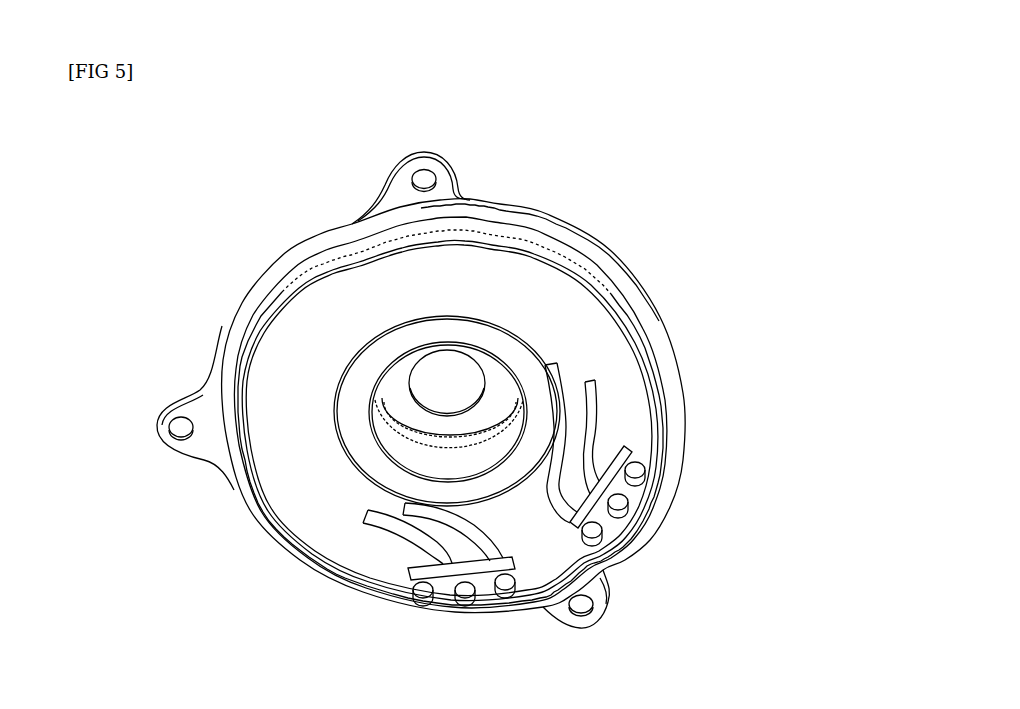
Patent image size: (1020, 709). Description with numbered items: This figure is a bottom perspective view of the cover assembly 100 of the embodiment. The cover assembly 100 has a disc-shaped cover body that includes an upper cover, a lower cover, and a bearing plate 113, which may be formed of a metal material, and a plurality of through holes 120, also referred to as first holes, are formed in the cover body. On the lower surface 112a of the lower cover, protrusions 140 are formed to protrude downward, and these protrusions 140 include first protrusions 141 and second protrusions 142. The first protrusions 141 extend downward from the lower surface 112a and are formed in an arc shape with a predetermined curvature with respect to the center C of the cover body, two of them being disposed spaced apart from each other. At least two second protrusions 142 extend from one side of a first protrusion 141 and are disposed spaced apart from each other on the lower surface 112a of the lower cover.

The cover assembly 100 is at (221, 144).
The bearing plate 113 is at (458, 205).
The lower surface of the lower cover 112a is at (315, 518).
The center of the cover body C is at (447, 385).
The through holes 120 is at (641, 481).
The protrusions 140 is at (757, 368).
The first protrusions 141 is at (572, 424).
The second protrusions 142 is at (596, 397).